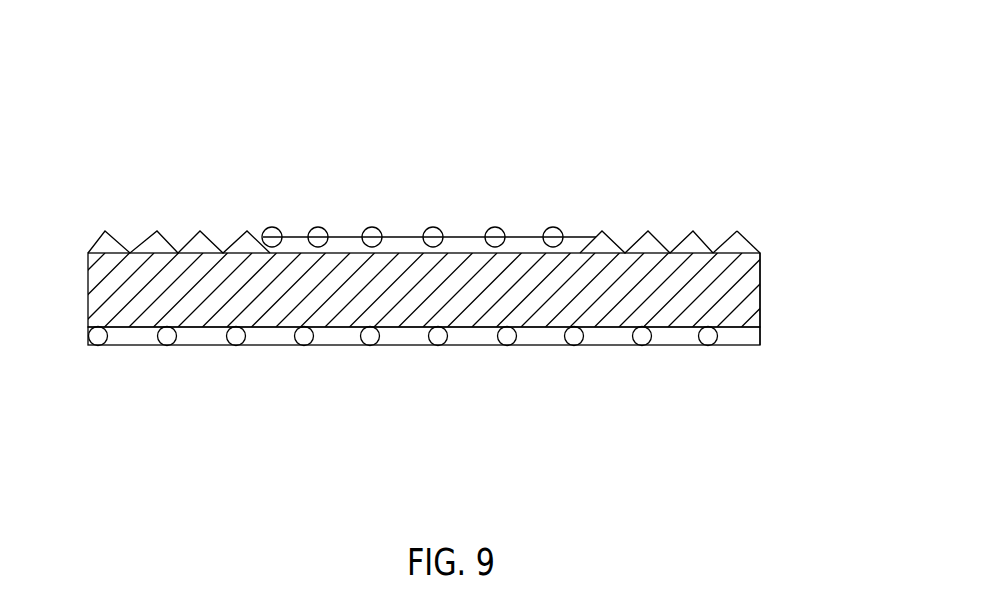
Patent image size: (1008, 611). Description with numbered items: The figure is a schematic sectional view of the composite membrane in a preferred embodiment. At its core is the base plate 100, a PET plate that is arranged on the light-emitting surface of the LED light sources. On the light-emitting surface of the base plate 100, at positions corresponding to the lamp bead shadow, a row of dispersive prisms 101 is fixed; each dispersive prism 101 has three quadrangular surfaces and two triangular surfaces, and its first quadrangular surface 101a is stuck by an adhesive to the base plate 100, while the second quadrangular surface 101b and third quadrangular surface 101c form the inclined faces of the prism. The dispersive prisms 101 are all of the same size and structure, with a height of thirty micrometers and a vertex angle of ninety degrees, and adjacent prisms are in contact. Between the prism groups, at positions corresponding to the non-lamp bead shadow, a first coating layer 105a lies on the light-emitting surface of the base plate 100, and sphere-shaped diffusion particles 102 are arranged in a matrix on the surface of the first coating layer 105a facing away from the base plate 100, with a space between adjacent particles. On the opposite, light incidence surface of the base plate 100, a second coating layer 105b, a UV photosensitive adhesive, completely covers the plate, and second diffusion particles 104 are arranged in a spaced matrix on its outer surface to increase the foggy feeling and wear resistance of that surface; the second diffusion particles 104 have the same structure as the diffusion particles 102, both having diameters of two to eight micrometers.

The base plate 100 is at (124, 367).
The dispersive prism 101 is at (133, 181).
The first quadrangular surface 101a is at (762, 255).
The second quadrangular surface 101b is at (748, 238).
The third quadrangular surface 101c is at (727, 247).
The diffusion particles 102 is at (389, 160).
The second diffusion particles 104 is at (535, 401).
The first coating layer 105a is at (538, 177).
The second coating layer 105b is at (296, 394).